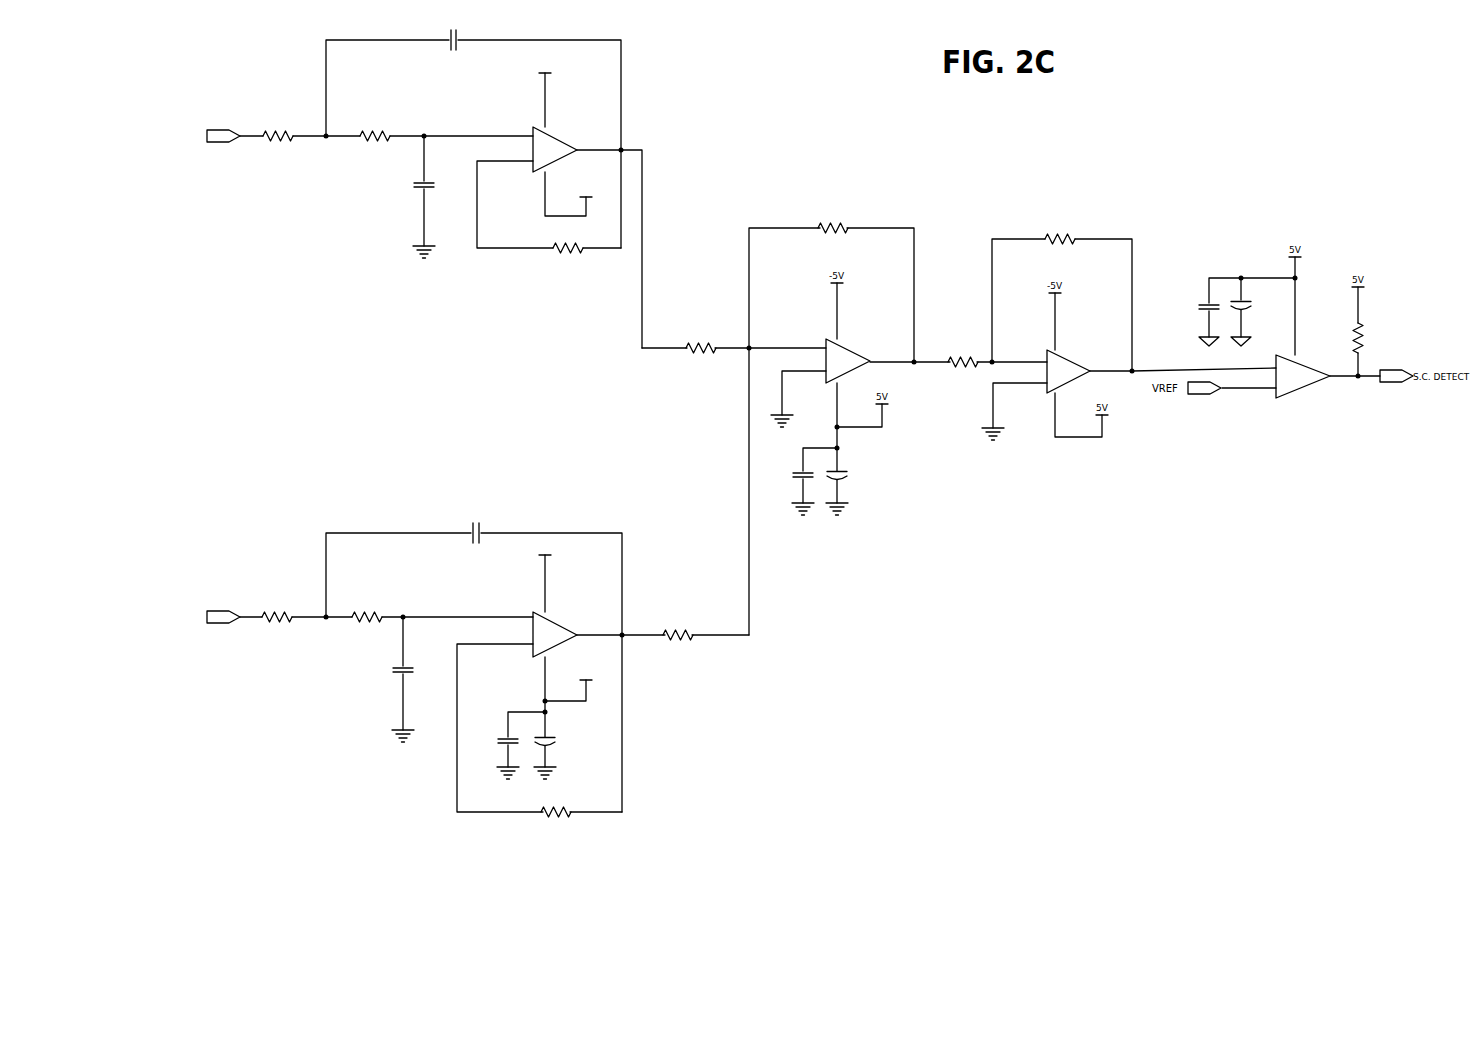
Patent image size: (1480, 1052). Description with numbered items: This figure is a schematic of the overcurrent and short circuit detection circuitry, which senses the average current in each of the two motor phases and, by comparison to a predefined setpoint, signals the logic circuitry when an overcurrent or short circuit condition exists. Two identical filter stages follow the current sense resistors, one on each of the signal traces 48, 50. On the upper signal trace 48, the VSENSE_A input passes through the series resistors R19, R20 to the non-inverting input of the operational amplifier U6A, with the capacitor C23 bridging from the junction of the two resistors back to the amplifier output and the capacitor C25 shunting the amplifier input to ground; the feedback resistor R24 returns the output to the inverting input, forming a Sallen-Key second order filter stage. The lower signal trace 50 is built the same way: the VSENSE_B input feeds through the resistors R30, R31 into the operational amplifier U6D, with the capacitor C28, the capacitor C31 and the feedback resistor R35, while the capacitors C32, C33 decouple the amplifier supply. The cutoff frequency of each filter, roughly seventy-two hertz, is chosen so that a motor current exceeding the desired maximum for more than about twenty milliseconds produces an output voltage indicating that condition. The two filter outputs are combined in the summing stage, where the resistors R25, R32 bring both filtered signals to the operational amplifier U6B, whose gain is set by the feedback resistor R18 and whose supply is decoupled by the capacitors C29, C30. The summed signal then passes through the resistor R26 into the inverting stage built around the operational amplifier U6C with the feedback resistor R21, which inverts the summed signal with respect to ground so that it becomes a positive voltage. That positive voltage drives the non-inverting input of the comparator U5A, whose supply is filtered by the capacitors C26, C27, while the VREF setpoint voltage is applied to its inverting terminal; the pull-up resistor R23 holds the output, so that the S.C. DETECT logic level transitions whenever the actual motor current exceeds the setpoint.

The signal trace 48 is at (626, 62).
The signal trace 50 is at (621, 742).
The resistor 100k R19 is at (278, 138).
The resistor 100k R20 is at (375, 138).
The capacitor 47000pf C23 is at (455, 36).
The capacitor 22000pf C25 is at (441, 190).
The op-amp LM324 U6A is at (555, 150).
The resistor 20k R24 is at (568, 250).
The resistor 10k R25 is at (701, 349).
The resistor 10k R18 is at (833, 229).
The op-amp LM324 U6B is at (848, 364).
The capacitor 0.1uf C29 is at (791, 481).
The capacitor 22uf C30 is at (850, 475).
The resistor 10k R26 is at (963, 362).
The resistor 10k R21 is at (1060, 240).
The op-amp LM324 U6C is at (1065, 375).
The comparator LM613 U5A is at (1302, 370).
The resistor 10k R23 is at (1374, 337).
The capacitor 0.1uf C26 is at (1197, 313).
The capacitor 22uf C27 is at (1255, 303).
The resistor 100k R30 is at (277, 619).
The resistor 100k R31 is at (367, 619).
The capacitor 47000pf C28 is at (477, 530).
The capacitor 22000pf C31 is at (421, 675).
The op-amp LM324 U6D is at (555, 636).
The resistor 10k R32 is at (678, 636).
The resistor 20k R35 is at (556, 814).
The capacitor 0.1uf C32 is at (497, 746).
The capacitor 22uf C33 is at (559, 755).